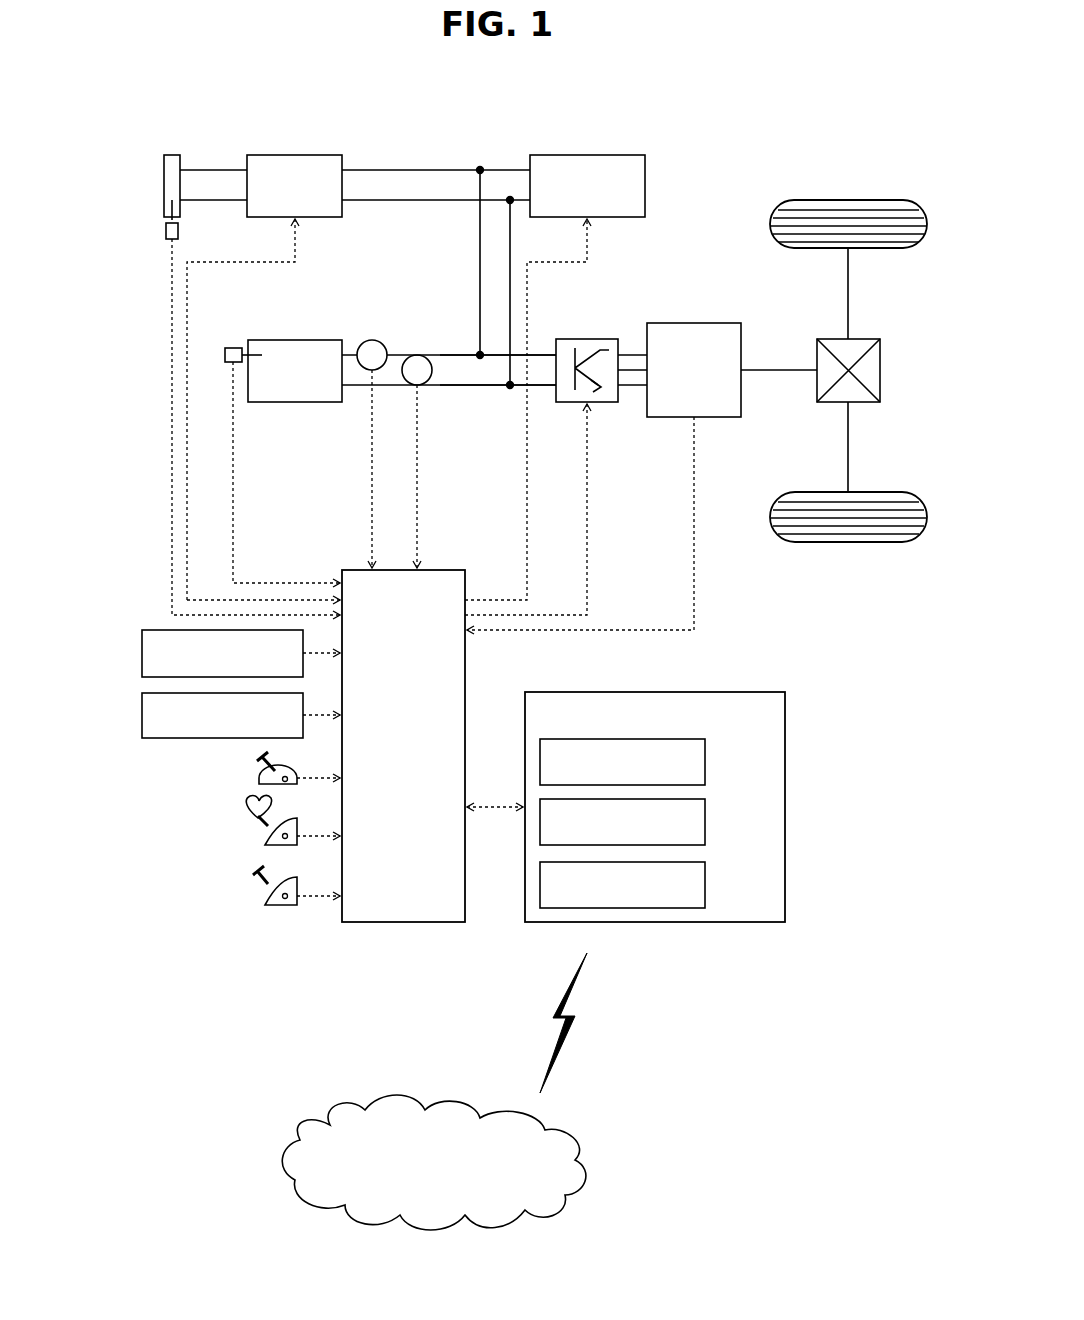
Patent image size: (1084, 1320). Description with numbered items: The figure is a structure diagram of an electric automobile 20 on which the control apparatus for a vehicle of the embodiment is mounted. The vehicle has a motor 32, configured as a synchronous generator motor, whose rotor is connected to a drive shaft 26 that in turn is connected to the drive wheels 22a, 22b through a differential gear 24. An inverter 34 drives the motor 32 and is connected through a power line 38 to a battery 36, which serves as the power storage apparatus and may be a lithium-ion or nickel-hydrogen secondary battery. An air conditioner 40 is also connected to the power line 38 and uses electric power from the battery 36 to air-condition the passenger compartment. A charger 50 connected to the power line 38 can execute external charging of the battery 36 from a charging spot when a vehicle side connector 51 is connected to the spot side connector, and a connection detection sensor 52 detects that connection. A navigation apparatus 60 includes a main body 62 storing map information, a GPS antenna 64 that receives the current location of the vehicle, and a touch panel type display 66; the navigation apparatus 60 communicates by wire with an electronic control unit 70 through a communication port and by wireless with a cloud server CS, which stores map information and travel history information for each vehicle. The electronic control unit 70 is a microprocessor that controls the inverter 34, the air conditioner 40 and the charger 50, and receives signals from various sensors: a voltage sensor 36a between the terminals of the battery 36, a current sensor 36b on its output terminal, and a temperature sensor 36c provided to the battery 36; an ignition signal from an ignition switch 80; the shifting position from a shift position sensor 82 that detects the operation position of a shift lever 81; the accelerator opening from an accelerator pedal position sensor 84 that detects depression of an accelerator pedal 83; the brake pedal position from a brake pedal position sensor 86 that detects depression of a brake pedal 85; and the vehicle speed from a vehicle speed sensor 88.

The electric automobile 20 is at (677, 150).
The drive wheel 22a is at (848, 198).
The drive wheel 22b is at (848, 545).
The differential gear 24 is at (865, 338).
The drive shaft 26 is at (778, 368).
The motor 32 is at (695, 322).
The inverter 34 is at (588, 338).
The battery 36 is at (295, 338).
The voltage sensor 36a is at (417, 353).
The current sensor 36b is at (372, 340).
The temperature sensor 36c is at (235, 346).
The power line 38 is at (448, 357).
The air conditioner 40 is at (585, 153).
The charger 50 is at (298, 153).
The vehicle side connector 51 is at (172, 153).
The connection detection sensor 52 is at (166, 231).
The navigation apparatus 60 is at (787, 731).
The main body 62 is at (707, 761).
The GPS antenna 64 is at (707, 823).
The display 66 is at (707, 881).
The electronic control unit 70 is at (447, 568).
The ignition switch 80 is at (140, 656).
The shift lever 81 is at (258, 770).
The shift position sensor 82 is at (262, 780).
The accelerator pedal 83 is at (262, 830).
The accelerator pedal position sensor 84 is at (262, 838).
The brake pedal 85 is at (262, 890).
The brake pedal position sensor 86 is at (262, 900).
The vehicle speed sensor 88 is at (140, 716).
The cloud server CS is at (432, 1103).